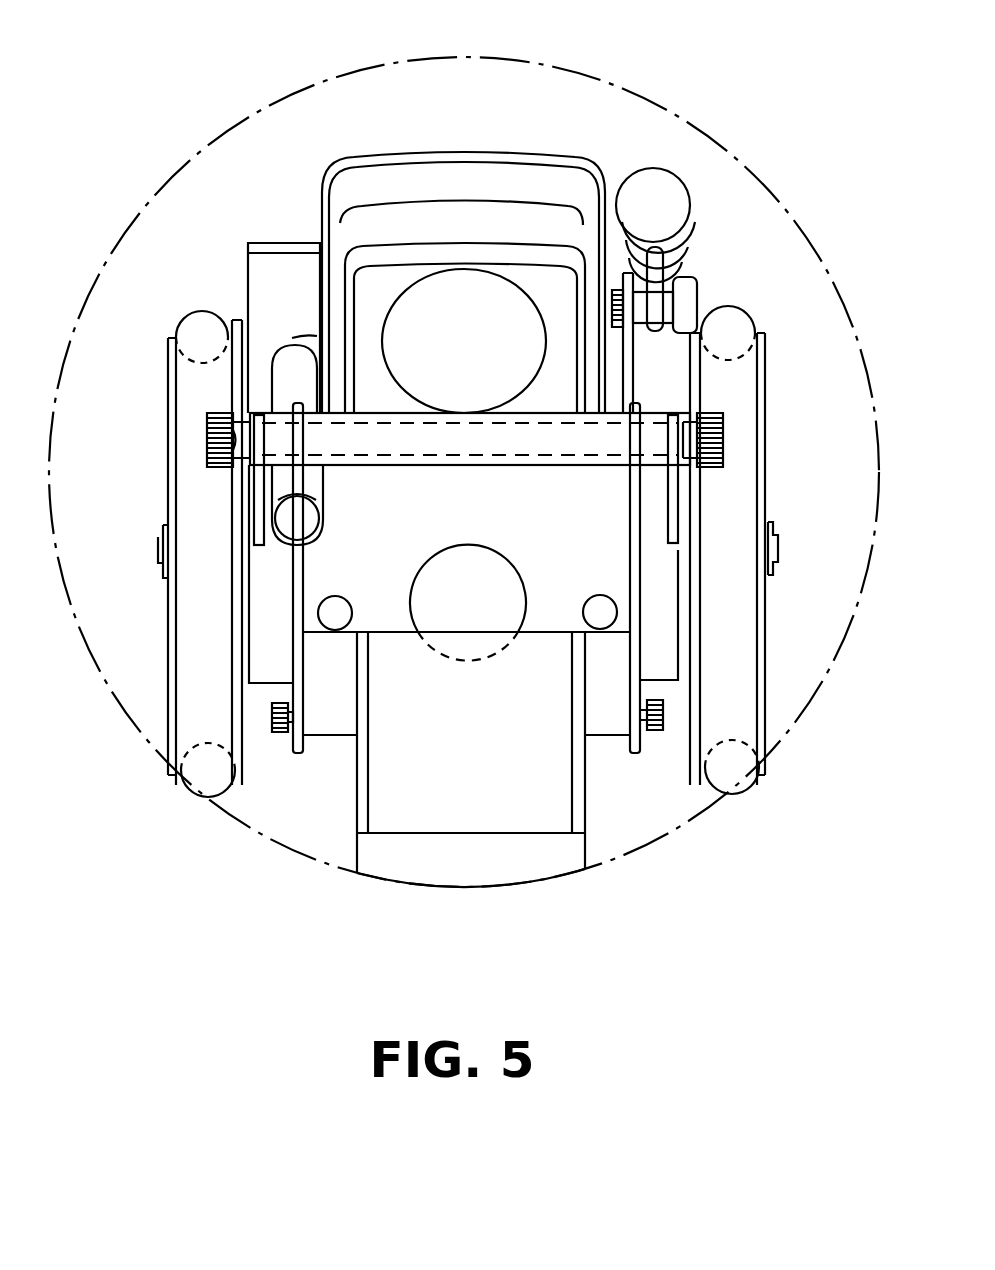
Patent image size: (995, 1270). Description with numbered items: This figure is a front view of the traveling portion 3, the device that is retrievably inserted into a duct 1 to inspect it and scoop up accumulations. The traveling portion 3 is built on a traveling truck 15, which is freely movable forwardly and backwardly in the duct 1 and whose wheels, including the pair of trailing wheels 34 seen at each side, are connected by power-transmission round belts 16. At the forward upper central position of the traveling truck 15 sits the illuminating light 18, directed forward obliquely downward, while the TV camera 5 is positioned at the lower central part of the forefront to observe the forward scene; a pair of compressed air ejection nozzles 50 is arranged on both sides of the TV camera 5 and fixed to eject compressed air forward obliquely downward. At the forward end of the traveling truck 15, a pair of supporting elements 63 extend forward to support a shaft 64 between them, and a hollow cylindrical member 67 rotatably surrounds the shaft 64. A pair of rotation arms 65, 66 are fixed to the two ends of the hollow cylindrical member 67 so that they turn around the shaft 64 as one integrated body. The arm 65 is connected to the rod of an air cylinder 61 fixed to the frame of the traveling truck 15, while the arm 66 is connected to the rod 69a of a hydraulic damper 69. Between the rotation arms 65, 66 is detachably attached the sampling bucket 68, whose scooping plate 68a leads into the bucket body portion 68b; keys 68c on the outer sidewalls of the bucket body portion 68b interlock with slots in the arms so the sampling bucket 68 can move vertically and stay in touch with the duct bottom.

The duct 1 is at (209, 148).
The traveling portion 3 is at (618, 123).
The illuminating light 18 is at (463, 293).
The hydraulic damper 69 is at (667, 205).
The rod 69a is at (658, 263).
The traveling truck 15 is at (248, 270).
The power-transmission round belt 16 is at (183, 317).
The trailing wheels 34 is at (168, 440).
The air cylinder 61 is at (283, 367).
The supporting elements 63 is at (258, 518).
The shaft 64 is at (445, 452).
The hollow cylindrical member 67 is at (541, 466).
The TV camera 5 is at (423, 557).
The rotation arm 65 is at (300, 586).
The rotation arm 66 is at (633, 567).
The compressed air ejection nozzles 50 is at (584, 615).
The sampling bucket 68 is at (475, 802).
The scooping plate 68a is at (457, 877).
The bucket body portion 68b is at (517, 813).
The keys 68c is at (330, 738).